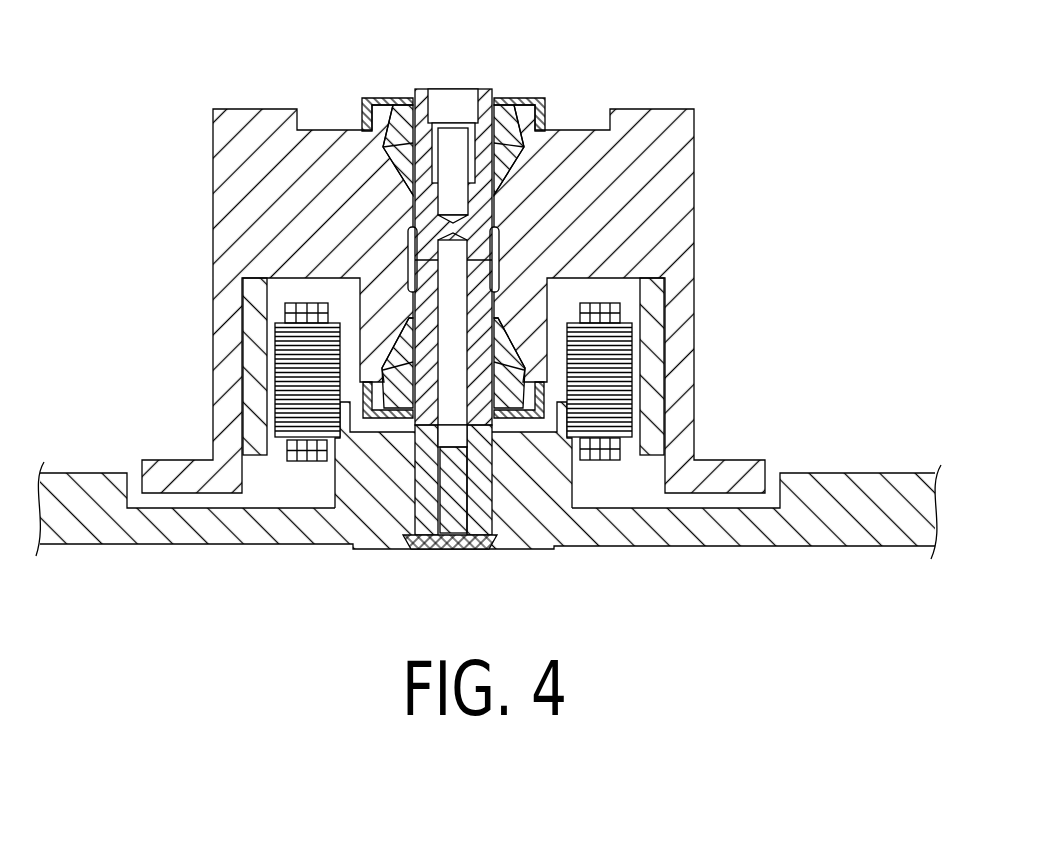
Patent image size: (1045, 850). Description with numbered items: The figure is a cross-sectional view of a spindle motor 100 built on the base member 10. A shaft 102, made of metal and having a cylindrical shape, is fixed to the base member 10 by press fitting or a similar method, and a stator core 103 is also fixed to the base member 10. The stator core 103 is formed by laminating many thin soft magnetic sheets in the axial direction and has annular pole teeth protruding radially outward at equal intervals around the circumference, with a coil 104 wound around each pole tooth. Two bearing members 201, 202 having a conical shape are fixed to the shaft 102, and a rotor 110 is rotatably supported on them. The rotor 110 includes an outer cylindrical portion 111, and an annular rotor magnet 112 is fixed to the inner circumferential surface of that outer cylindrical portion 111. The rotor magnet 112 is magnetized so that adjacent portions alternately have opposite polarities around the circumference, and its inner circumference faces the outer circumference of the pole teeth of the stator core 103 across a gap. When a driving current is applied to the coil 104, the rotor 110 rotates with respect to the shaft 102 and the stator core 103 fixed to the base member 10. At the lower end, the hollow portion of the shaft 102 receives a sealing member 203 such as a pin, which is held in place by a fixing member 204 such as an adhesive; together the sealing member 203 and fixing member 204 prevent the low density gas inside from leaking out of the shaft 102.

The base member 10 is at (853, 502).
The spindle motor 100 is at (658, 74).
The shaft 102 is at (410, 492).
The stator core 103 is at (580, 413).
The coil 104 is at (300, 303).
The rotor 110 is at (246, 91).
The outer cylindrical portion 111 is at (680, 383).
The rotor magnet 112 is at (650, 333).
The bearing member 201 is at (401, 100).
The bearing member 202 is at (405, 408).
The sealing member 203 is at (463, 470).
The fixing member 204 is at (443, 550).